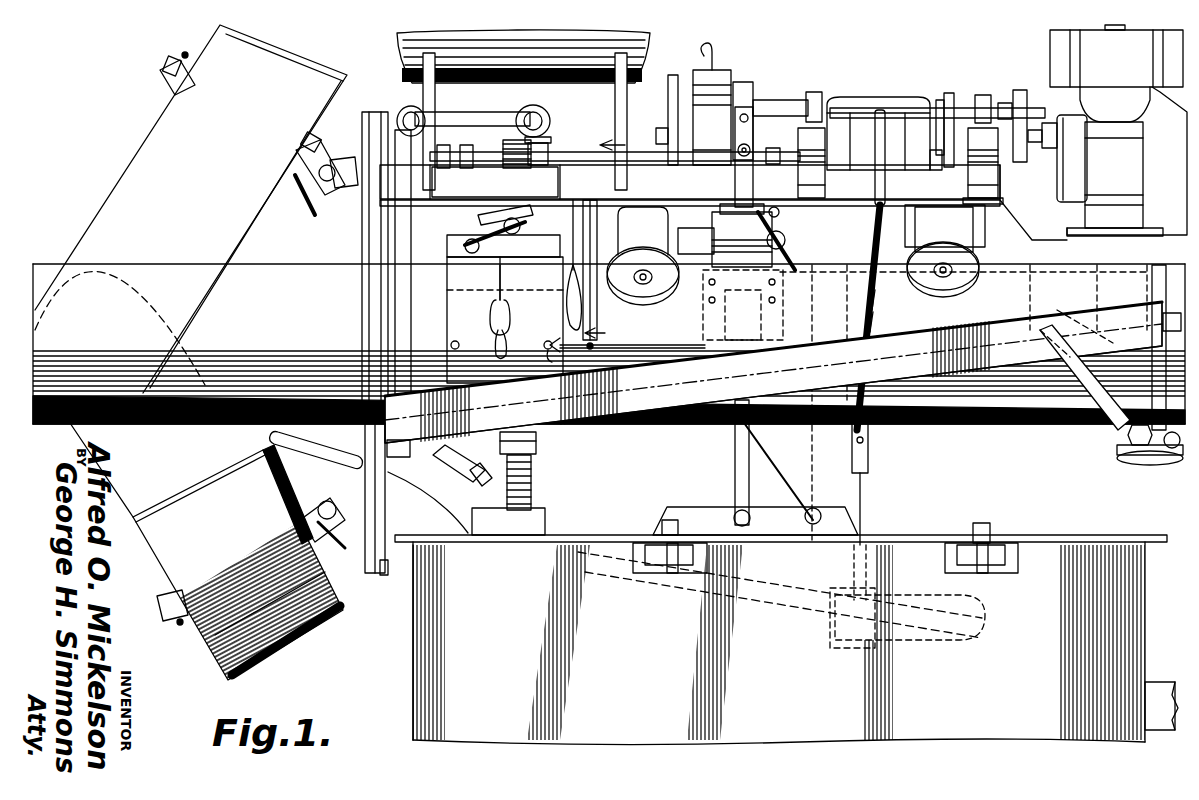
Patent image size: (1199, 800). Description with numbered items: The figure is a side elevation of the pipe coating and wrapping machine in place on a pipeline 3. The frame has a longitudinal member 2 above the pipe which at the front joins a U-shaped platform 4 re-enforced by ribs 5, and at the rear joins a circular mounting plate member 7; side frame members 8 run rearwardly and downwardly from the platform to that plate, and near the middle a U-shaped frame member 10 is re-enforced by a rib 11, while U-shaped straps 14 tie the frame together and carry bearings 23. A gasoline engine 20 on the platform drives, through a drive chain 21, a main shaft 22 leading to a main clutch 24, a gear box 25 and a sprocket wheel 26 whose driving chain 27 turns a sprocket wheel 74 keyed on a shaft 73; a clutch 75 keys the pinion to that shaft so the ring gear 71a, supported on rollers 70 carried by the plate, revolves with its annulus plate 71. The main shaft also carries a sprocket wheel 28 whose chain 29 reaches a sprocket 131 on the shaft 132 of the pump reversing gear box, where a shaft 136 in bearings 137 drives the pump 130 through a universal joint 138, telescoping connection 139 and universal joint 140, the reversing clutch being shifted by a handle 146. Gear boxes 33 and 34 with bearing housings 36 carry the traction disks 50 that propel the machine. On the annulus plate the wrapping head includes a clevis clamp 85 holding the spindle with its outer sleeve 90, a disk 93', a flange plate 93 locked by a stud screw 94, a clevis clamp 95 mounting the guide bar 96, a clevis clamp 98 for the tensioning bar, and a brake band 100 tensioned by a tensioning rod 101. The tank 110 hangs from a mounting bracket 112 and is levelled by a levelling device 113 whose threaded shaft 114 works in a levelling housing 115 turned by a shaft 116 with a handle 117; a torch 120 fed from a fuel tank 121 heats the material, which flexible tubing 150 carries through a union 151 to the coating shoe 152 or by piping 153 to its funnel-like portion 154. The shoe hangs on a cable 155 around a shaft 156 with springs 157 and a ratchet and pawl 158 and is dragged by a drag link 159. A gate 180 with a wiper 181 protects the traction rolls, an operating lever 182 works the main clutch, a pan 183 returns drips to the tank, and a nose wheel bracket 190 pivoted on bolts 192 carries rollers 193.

The longitudinally extending member 2 is at (757, 157).
The pipeline 3 is at (268, 270).
The platform 4 is at (1040, 236).
The ribs 5 is at (1010, 290).
The mounting plate member 7 is at (362, 301).
The side frame members 8 is at (616, 405).
The U-shaped frame member 10 is at (603, 160).
The rib 11 is at (783, 285).
The U-shaped straps 14 is at (810, 130).
The gasoline engine 20 is at (1108, 145).
The drive chain 21 is at (1020, 90).
The main shaft 22 is at (668, 100).
The bearings 23 is at (812, 92).
The main clutch 24 is at (760, 90).
The gear box 25 is at (722, 75).
The sprocket wheel 26 is at (704, 60).
The driving chain 27 is at (656, 135).
The sprocket wheel 28 is at (947, 93).
The chain 29 is at (940, 100).
The gear box 33 is at (696, 248).
The gear box 34 is at (978, 240).
The bearing housing 36 is at (670, 285).
The traction disk 50 is at (655, 290).
The V-groove pulleys or rollers 70 is at (345, 464).
The annulus plate 71 is at (365, 436).
The ring gear 71a is at (386, 572).
The shaft 73 is at (545, 150).
The sprocket wheel 74 is at (690, 185).
The clutch 75 is at (440, 145).
The clevis clamp 85 is at (325, 529).
The outer sleeve 90 is at (885, 98).
The flange plate 93 is at (155, 340).
The disk 93' is at (208, 352).
The stud screw 94 is at (185, 52).
The clevis clamp 95 is at (330, 190).
The guide bar 96 is at (165, 66).
The clevis clamp 98 is at (318, 140).
The brake band 100 is at (300, 548).
The tensioning rod 101 is at (275, 497).
The tank 110 is at (1050, 545).
The mounting bracket 112 is at (680, 522).
The tank levelling device 113 is at (735, 458).
The threaded shaft 114 is at (742, 451).
The levelling housing 115 is at (742, 235).
The shaft 116 is at (790, 240).
The handle 117 is at (786, 402).
The torch 120 is at (1150, 692).
The fuel tank 121 is at (523, 56).
The pump 130 is at (830, 630).
The sprocket 131 is at (936, 170).
The shaft 132 is at (1003, 200).
The shaft 136 is at (880, 300).
The bearings 137 is at (500, 180).
The universal joint 138 is at (879, 322).
The telescoping connection 139 is at (490, 105).
The universal joint 140 is at (870, 450).
The handle 146 is at (870, 130).
The flexible tubing 150 is at (535, 495).
The union 151 is at (540, 445).
The coating shoe 152 is at (492, 312).
The piping 153 is at (453, 465).
The funnel-like portion 154 is at (503, 246).
The cable 155 is at (505, 320).
The shaft 156 is at (465, 240).
The springs 157 is at (492, 164).
The ratchet and pawl 158 is at (478, 220).
The drag link 159 is at (650, 355).
The gate 180 is at (560, 265).
The wiper 181 is at (620, 290).
The operating lever 182 is at (583, 300).
The pan 183 is at (442, 642).
The bracket 190 is at (1095, 385).
The bolts 192 is at (1045, 345).
The rollers 193 is at (1150, 466).